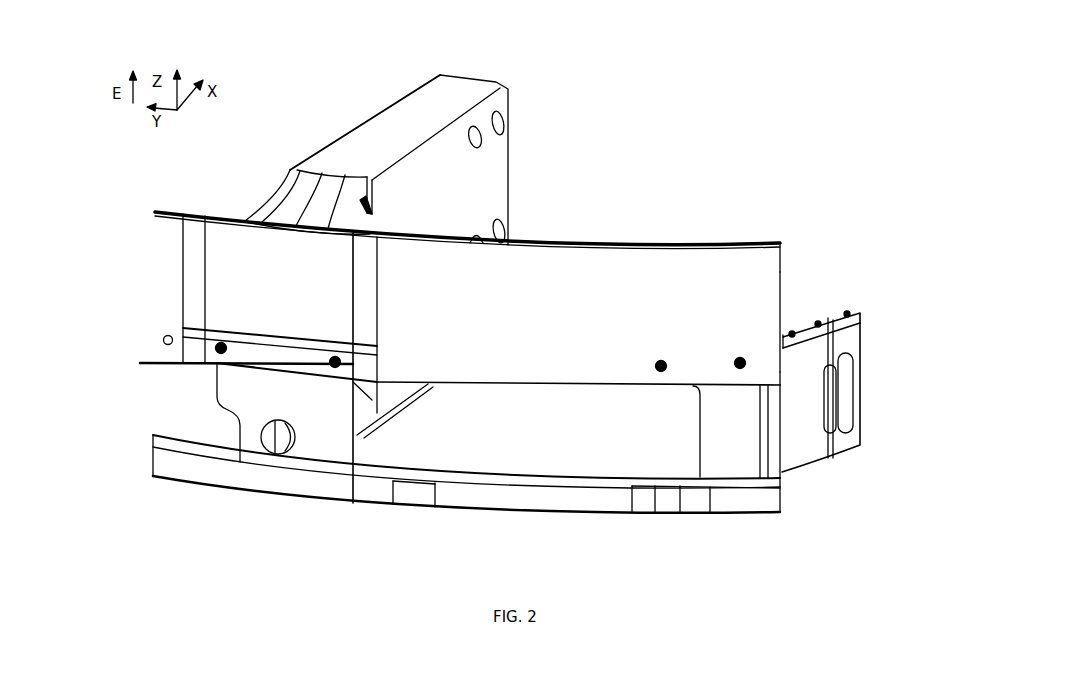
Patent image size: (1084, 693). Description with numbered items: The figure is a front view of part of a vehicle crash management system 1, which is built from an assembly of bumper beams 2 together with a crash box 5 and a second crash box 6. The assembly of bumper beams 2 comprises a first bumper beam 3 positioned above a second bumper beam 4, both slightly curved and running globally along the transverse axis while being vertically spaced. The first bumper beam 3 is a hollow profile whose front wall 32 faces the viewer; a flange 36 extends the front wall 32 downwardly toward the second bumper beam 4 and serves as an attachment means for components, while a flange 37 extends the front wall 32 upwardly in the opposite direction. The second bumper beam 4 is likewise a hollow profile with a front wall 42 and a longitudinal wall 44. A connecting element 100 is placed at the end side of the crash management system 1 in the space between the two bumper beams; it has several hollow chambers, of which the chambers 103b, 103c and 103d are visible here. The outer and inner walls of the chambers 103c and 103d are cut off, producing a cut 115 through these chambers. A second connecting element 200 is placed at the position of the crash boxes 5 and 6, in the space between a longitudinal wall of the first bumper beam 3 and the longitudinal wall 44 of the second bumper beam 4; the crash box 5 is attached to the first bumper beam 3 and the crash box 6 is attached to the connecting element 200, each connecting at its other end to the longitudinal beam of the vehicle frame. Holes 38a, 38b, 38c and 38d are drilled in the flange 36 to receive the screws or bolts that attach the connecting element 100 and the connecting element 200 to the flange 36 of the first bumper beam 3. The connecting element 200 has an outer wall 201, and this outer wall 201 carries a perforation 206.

The crash management system 1 is at (682, 42).
The assembly of bumper beams 2 is at (803, 183).
The first bumper beam 3 is at (158, 252).
The second bumper beam 4 is at (147, 457).
The crash box 5 is at (419, 88).
The crash box 6 is at (394, 393).
The front wall 32 is at (756, 296).
The flange 36 is at (782, 375).
The flange 37 is at (677, 238).
The hole 38a is at (739, 370).
The hole 38b is at (658, 371).
The hole 38c is at (216, 350).
The hole 38d is at (330, 361).
The front wall 42 is at (762, 491).
The longitudinal wall 44 is at (487, 466).
The connecting element 100 is at (826, 456).
The hollow chamber 103b is at (792, 321).
The hollow chamber 103c is at (819, 312).
The hollow chamber 103d is at (848, 302).
The cut 115 is at (845, 398).
The connecting element 200 is at (216, 397).
The outer wall 201 is at (331, 421).
The perforation 206 is at (262, 438).